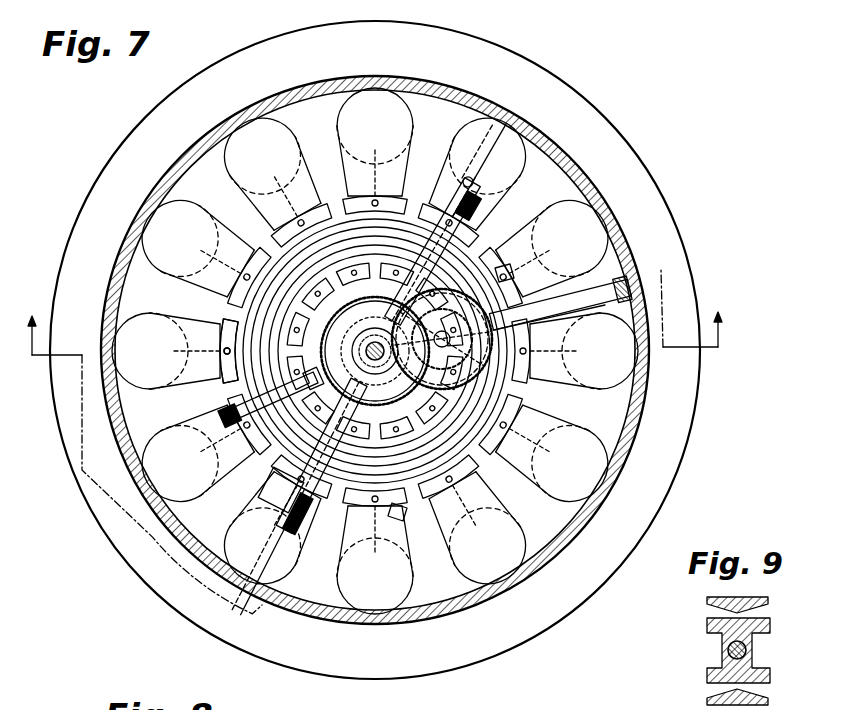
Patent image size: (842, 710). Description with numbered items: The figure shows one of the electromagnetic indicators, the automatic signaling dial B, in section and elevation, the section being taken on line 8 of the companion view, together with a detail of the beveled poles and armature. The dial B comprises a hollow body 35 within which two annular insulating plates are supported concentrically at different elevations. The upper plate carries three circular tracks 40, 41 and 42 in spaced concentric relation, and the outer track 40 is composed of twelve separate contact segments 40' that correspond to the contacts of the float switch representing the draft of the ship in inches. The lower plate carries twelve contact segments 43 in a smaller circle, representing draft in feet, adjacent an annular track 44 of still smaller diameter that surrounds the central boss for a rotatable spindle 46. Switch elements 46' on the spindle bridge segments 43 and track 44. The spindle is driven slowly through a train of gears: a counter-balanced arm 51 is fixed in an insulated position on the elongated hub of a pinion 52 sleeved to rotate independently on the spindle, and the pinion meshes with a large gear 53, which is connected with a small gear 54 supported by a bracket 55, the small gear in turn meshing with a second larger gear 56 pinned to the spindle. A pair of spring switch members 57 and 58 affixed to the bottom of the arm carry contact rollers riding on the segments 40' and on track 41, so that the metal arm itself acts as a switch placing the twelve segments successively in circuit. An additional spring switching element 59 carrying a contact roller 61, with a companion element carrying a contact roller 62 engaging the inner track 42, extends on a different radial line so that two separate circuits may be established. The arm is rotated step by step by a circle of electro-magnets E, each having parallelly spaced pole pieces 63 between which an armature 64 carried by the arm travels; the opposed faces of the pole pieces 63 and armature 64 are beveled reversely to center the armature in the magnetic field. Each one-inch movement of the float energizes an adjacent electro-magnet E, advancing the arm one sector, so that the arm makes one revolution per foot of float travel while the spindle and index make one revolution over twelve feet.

In FIG. 7, the automatic signaling dial B is at (375, 350).
In FIG. 7, the electro-magnets E is at (606, 228).
In FIG. 7, the section line 8— 8 is at (371, 442).
In FIG. 7, the hollow body 35 is at (646, 406).
In FIG. 7, the outer track 40 is at (388, 348).
In FIG. 7, the contact segments 40' is at (313, 487).
In FIG. 7, the circular track 41 is at (232, 346).
In FIG. 7, the circular track 42 is at (243, 360).
In FIG. 7, the contact segments 43 is at (262, 295).
In FIG. 7, the annular track 44 is at (276, 276).
In FIG. 7, the rotatable spindle 46 is at (375, 351).
In FIG. 7, the switch elements 46' is at (334, 351).
In FIG. 7, the counter-balanced arm 51 is at (470, 177).
In FIG. 9, the counter-balanced arm 51 is at (748, 650).
In FIG. 7, the pinion 52 is at (368, 351).
In FIG. 7, the large gear 53 is at (494, 318).
In FIG. 7, the small gear 54 is at (442, 339).
In FIG. 7, the bracket 55 is at (560, 303).
In FIG. 7, the second larger gear 56 is at (410, 372).
In FIG. 7, the spring switch member 57 is at (284, 472).
In FIG. 7, the spring switch member 58 is at (434, 226).
In FIG. 7, the spring switching element 59 is at (240, 386).
In FIG. 7, the contact roller 61 is at (258, 396).
In FIG. 7, the contact roller 62 is at (480, 238).
In FIG. 7, the pole pieces 63 is at (510, 273).
In FIG. 9, the pole pieces 63 is at (706, 601).
In FIG. 7, the armature 64 is at (285, 500).
In FIG. 9, the armature 64 is at (707, 631).